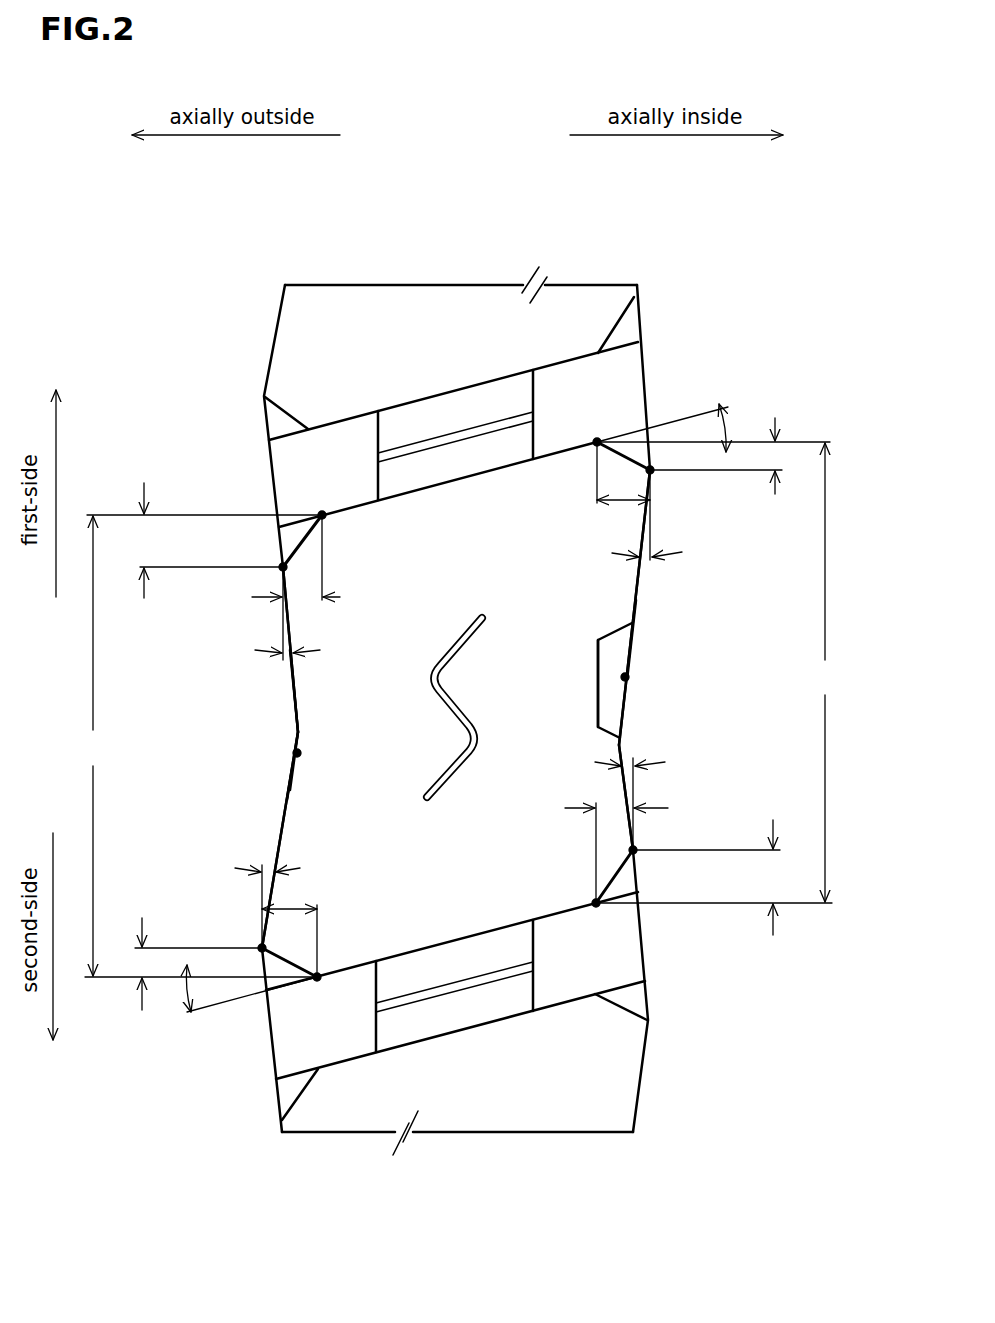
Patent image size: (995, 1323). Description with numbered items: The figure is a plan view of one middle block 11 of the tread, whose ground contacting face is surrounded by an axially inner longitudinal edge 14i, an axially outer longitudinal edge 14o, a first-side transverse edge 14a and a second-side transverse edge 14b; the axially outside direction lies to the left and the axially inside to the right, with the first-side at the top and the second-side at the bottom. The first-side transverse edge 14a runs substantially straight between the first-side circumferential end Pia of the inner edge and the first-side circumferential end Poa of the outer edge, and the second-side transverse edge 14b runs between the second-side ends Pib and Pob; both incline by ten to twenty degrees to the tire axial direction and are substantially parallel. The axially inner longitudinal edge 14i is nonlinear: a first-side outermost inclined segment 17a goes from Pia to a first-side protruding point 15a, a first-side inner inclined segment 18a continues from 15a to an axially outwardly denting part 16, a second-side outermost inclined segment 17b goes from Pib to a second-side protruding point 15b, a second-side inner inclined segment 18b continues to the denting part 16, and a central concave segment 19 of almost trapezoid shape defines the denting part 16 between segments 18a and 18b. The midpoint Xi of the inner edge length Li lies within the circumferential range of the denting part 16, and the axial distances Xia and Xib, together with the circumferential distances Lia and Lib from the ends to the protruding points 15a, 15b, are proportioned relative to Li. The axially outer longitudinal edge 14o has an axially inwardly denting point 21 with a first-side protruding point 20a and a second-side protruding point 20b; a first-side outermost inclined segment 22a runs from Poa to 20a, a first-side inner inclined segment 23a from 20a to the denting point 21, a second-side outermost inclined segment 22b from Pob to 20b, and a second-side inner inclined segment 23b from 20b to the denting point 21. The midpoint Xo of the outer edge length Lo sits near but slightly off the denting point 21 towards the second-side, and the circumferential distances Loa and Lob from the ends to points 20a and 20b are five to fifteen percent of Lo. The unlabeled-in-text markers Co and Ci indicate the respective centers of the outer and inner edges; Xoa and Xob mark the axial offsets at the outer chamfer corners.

The middle block 11 is at (540, 578).
The first-side transverse edge 14a is at (440, 490).
The second-side transverse edge 14b is at (460, 940).
The axially outer longitudinal edge 14o is at (290, 623).
The axially inner longitudinal edge 14i is at (635, 598).
The first-side protruding point 15a is at (656, 464).
The second-side protruding point 15b is at (646, 859).
The denting part 16 is at (598, 718).
The first-side outermost inclined segment 17a is at (627, 457).
The second-side outermost inclined segment 17b is at (615, 877).
The first-side inner inclined segment 18a is at (635, 617).
The second-side inner inclined segment 18b is at (627, 788).
The central concave segment 19 is at (598, 698).
The first-side protruding point 20a is at (276, 564).
The second-side protruding point 20b is at (257, 957).
The denting point 21 is at (290, 722).
The first-side outermost inclined segment 22a is at (300, 543).
The second-side outermost inclined segment 22b is at (290, 962).
The first-side inner inclined segment 23a is at (295, 690).
The second-side inner inclined segment 23b is at (277, 820).
The first-side circumferential end of the axially outer longitudinal edge Poa is at (324, 506).
The second-side circumferential end of the axially outer longitudinal edge Pob is at (319, 987).
The first-side circumferential end of the axially inner longitudinal edge Pia is at (593, 434).
The second-side circumferential end of the axially inner longitudinal edge Pib is at (584, 916).
The midpoint of the circumferential length of the axially outer longitudinal edge Xo is at (290, 752).
The midpoint of the circumferential length of the axially inner longitudinal edge Xi is at (636, 677).
The outer edge center Co is at (280, 793).
The inner edge center Ci is at (646, 644).
The circumferential length of the axially outer longitudinal edge Lo is at (200, 746).
The circumferential distance from Poa to 20a Loa is at (201, 540).
The circumferential distance from Pob to 20b Lob is at (142, 963).
The circumferential length of the axially inner longitudinal edge Li is at (716, 672).
The circumferential distance from Pia to 15a Lia is at (777, 458).
The circumferential distance from Pib to 15b Lib is at (713, 877).
The first outer chamfer width Xoa is at (303, 599).
The second outer chamfer width Xob is at (293, 908).
The axial distance from Pia to 15a Xia is at (620, 503).
The axial distance from Pib to 15b Xib is at (615, 806).